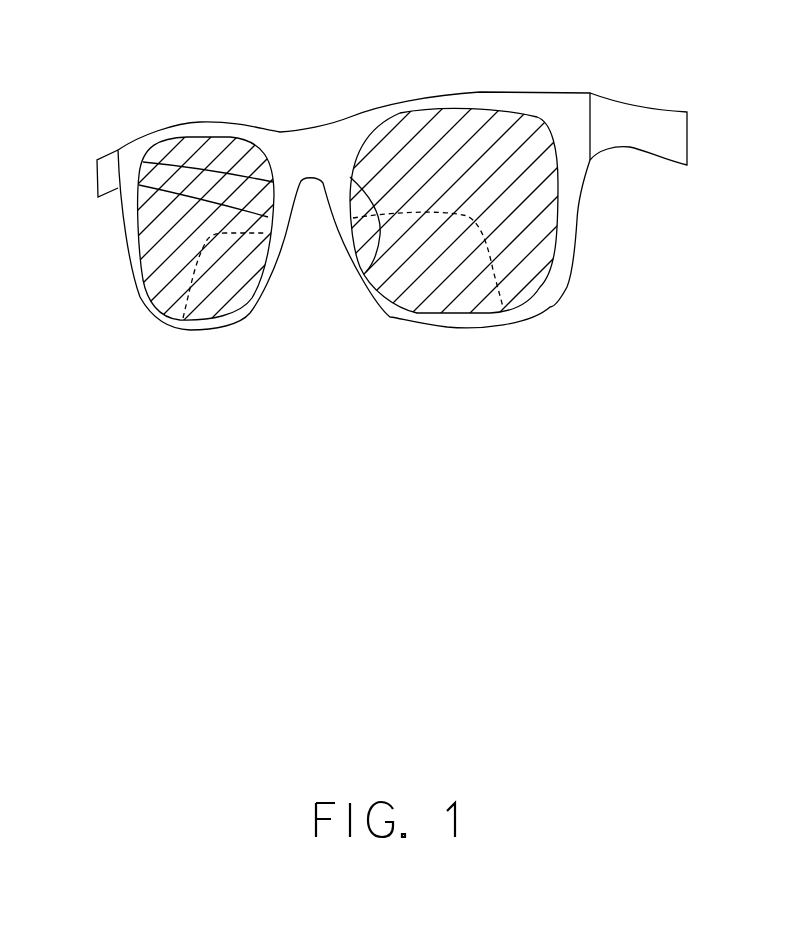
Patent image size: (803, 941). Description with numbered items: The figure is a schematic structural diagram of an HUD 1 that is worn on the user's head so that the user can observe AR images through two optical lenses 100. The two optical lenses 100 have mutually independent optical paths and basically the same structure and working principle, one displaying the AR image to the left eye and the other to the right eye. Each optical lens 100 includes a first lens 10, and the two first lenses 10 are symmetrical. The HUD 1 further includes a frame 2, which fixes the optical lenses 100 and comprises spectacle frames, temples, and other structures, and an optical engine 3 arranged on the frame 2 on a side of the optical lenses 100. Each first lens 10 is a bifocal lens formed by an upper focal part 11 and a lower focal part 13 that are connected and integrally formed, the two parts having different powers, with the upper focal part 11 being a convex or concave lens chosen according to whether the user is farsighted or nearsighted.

The HUD 1 is at (417, 32).
The frame 2 is at (672, 137).
The optical engine 3 is at (103, 177).
The first lens 10 is at (207, 305).
The upper focal part 11 is at (157, 286).
The lower focal part 13 is at (227, 294).
The optical lens 100 is at (370, 283).